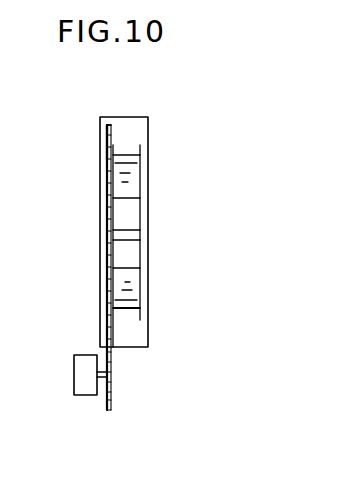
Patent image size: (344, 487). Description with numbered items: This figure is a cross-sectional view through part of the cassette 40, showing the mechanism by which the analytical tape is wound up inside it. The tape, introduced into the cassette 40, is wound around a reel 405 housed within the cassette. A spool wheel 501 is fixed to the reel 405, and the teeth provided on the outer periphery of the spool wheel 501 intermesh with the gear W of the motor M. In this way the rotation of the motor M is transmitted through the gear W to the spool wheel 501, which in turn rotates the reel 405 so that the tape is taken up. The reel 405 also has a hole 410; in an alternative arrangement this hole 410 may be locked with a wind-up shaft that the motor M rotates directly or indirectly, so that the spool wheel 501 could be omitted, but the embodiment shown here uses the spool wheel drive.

The cassette 40 is at (149, 136).
The reel 405 is at (130, 213).
The hole 410 is at (130, 237).
The spool wheel 501 is at (112, 134).
The gear W is at (112, 390).
The motor M is at (84, 395).